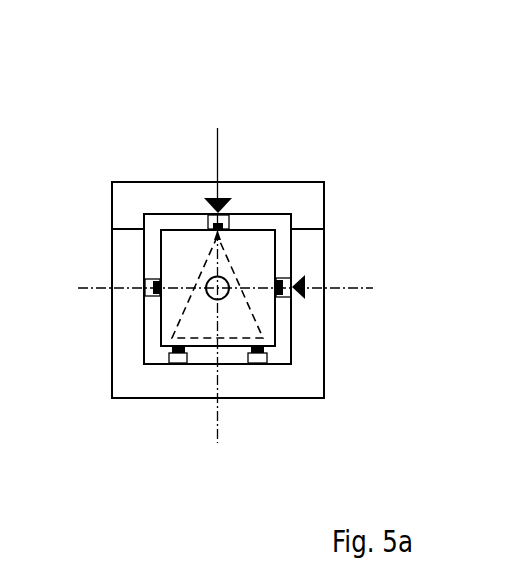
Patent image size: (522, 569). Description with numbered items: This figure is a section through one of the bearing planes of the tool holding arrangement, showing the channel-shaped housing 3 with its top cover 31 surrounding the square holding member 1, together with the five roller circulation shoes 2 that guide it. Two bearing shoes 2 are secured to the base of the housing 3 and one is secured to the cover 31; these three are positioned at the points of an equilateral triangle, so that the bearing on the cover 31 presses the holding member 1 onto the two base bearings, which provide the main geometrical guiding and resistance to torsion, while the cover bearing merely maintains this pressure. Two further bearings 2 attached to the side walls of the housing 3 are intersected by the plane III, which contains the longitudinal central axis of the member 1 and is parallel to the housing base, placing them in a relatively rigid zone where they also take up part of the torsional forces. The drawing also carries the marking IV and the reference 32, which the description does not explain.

The holding member 1 is at (191, 247).
The roller circulation shoes 2 is at (228, 202).
The housing 3 is at (310, 265).
The top cover 31 is at (292, 197).
The frame bar 32 is at (210, 365).
The section line IV is at (217, 147).
The plane III is at (367, 289).